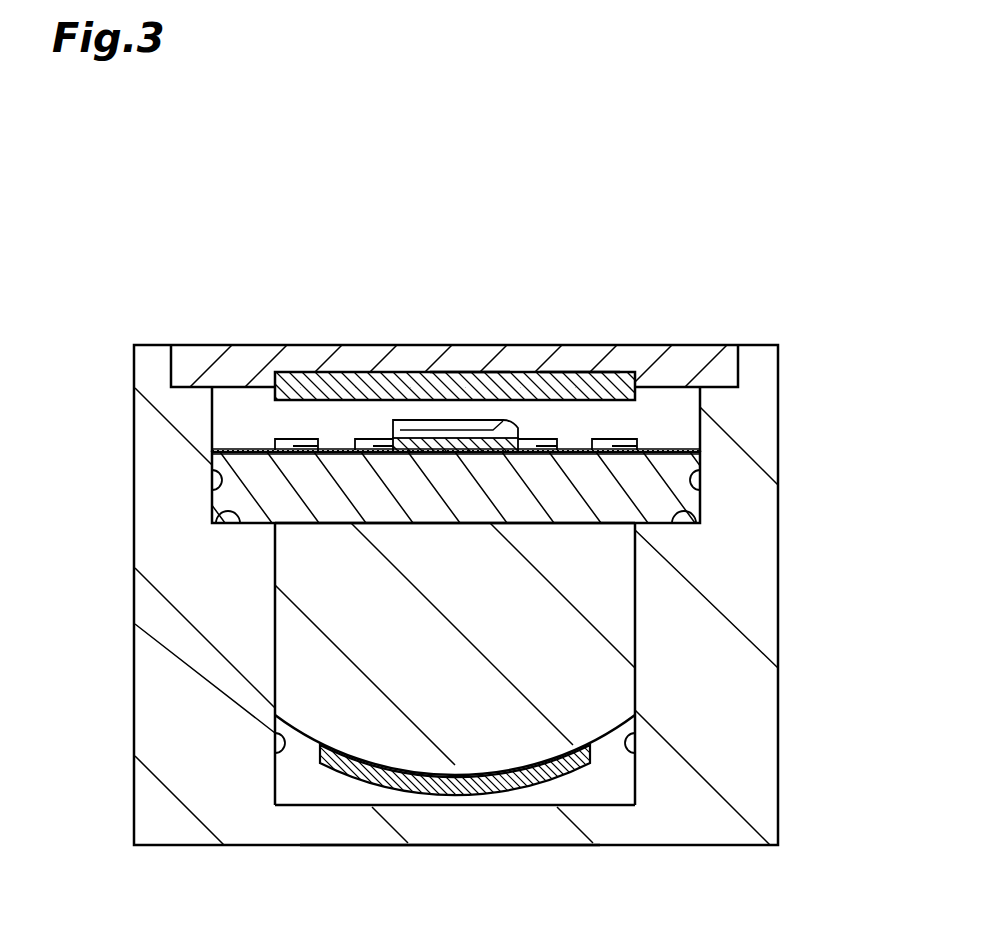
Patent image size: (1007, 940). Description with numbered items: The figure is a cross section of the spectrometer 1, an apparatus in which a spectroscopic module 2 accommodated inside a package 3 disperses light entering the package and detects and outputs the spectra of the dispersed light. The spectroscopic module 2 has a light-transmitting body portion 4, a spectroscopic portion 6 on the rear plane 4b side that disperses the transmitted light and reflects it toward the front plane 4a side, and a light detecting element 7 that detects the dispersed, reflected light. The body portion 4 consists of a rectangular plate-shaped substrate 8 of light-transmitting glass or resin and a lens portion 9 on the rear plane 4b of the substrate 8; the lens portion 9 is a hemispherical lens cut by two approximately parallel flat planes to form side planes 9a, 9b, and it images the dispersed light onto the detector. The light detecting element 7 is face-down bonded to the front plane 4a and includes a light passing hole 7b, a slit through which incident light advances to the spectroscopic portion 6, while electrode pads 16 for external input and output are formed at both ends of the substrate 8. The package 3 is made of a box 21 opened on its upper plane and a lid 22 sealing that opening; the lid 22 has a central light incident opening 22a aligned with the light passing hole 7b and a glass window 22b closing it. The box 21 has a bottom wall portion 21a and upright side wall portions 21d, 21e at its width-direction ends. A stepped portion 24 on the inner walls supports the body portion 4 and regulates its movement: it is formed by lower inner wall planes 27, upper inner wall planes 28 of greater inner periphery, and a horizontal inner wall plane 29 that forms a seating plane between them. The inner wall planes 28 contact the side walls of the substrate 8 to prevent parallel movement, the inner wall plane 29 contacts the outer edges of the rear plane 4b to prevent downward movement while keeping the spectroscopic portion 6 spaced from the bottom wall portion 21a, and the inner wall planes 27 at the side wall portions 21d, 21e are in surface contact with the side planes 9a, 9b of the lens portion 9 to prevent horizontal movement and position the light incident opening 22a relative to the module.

The spectrometer 1 is at (828, 168).
The spectroscopic module 2 is at (241, 438).
The package 3 is at (737, 264).
The body portion 4 is at (628, 889).
The front plane 4a is at (255, 450).
The rear plane 4b is at (307, 523).
The spectroscopic portion 6 is at (358, 777).
The light detecting element 7 is at (490, 416).
The light passing hole 7b is at (427, 420).
The substrate 8 is at (575, 505).
The lens portion 9 is at (520, 730).
The side plane 9a is at (273, 645).
The side plane 9b is at (638, 643).
The electrode pad 16 is at (356, 440).
The box 21 is at (782, 367).
The bottom wall portion 21a is at (455, 830).
The side wall portion 21d is at (162, 715).
The side wall portion 21e is at (748, 716).
The lid 22 is at (730, 358).
The light incident opening 22a is at (571, 369).
The glass window 22b is at (470, 370).
The stepped portion 24 is at (78, 487).
The inner wall plane 27 is at (283, 733).
The inner wall plane 28 is at (212, 474).
The inner wall plane 29 is at (213, 510).